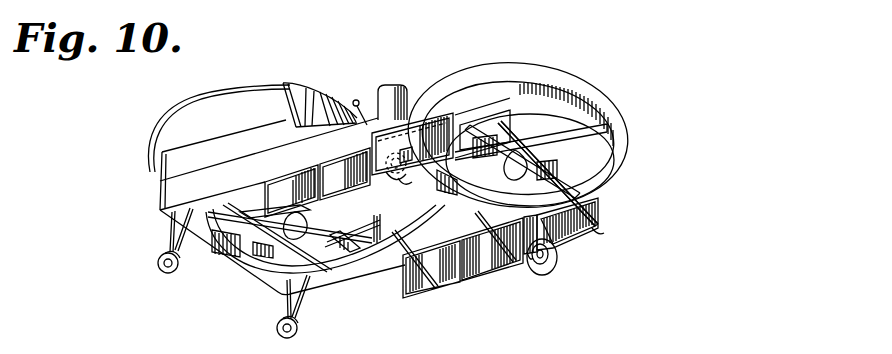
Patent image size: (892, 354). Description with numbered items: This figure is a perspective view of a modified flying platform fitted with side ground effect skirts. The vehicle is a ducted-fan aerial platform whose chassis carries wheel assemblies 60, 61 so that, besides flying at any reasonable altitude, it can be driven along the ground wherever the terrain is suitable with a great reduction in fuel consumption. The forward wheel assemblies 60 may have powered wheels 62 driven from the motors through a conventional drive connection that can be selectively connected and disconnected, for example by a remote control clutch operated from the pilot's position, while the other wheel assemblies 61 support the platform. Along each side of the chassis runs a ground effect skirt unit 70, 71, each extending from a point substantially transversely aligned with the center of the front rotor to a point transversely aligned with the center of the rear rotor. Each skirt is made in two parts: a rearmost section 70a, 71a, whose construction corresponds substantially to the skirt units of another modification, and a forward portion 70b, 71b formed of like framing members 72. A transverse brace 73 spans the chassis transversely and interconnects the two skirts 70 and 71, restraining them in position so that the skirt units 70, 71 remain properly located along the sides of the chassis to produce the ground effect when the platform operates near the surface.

The forward wheel assembly 60 is at (531, 272).
The wheel assembly 61 is at (174, 276).
The powered wheel 62 is at (404, 184).
The ground effect skirt unit 70 is at (467, 283).
The rearmost section 70a is at (472, 237).
The forward portion 70b is at (578, 238).
The ground effect skirt unit 71 is at (262, 197).
The rearmost section 71a is at (340, 160).
The forward portion 71b is at (413, 130).
The framing member 72 is at (381, 183).
The transverse brace 73 is at (598, 212).